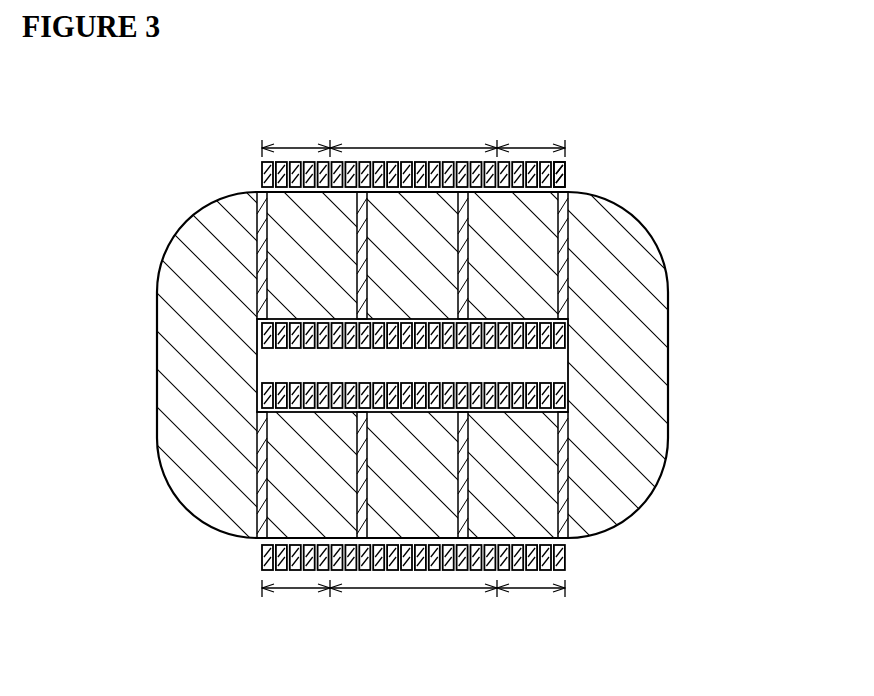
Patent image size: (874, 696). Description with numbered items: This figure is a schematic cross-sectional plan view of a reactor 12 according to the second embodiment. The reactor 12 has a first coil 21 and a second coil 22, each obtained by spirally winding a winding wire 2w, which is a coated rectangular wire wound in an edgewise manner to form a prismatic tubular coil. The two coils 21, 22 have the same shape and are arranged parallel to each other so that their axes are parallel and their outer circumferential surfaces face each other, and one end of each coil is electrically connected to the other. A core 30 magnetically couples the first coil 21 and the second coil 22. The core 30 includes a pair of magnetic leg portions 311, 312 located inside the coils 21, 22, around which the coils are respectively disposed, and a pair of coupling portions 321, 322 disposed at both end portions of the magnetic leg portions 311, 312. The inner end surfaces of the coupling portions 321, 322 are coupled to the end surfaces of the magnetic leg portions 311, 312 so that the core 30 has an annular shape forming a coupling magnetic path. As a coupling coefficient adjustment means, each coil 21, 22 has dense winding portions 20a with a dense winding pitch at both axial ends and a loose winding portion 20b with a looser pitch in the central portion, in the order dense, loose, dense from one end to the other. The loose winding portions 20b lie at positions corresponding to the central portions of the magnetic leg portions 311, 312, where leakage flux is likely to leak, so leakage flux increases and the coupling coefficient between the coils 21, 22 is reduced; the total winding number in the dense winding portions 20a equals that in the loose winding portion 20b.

The reactor 12 is at (674, 141).
The first coil 21 is at (565, 123).
The second coil 22 is at (565, 627).
The dense winding portion 20a is at (413, 368).
The loose winding portion 20b is at (413, 368).
The winding wire 2w is at (567, 174).
The core 30 is at (424, 348).
The magnetic leg portion 311 is at (259, 189).
The magnetic leg portion 312 is at (570, 540).
The coupling portion 321 is at (160, 369).
The coupling portion 322 is at (668, 327).